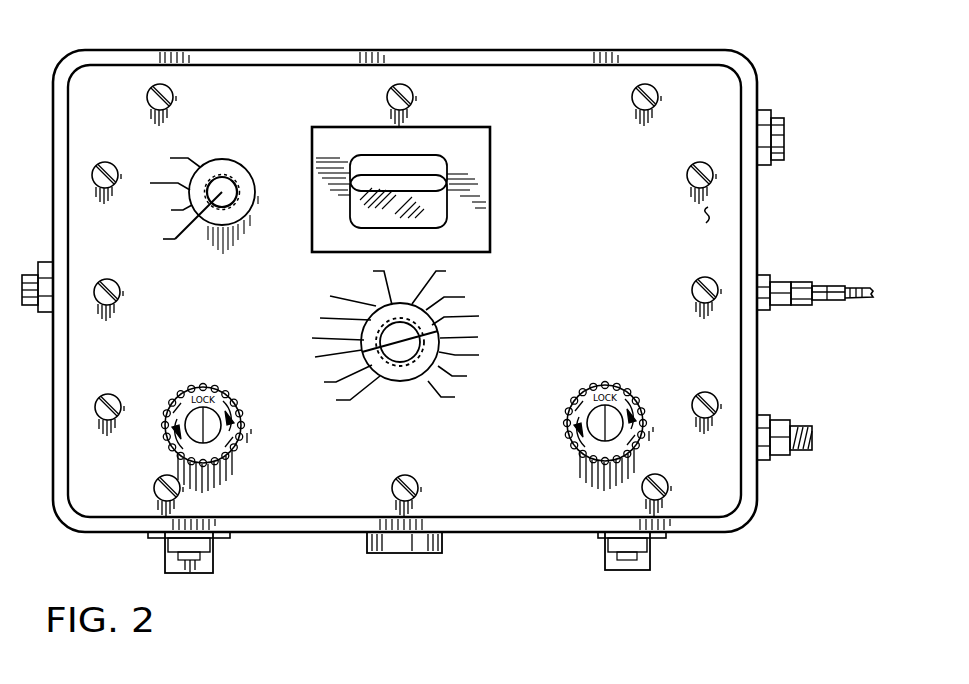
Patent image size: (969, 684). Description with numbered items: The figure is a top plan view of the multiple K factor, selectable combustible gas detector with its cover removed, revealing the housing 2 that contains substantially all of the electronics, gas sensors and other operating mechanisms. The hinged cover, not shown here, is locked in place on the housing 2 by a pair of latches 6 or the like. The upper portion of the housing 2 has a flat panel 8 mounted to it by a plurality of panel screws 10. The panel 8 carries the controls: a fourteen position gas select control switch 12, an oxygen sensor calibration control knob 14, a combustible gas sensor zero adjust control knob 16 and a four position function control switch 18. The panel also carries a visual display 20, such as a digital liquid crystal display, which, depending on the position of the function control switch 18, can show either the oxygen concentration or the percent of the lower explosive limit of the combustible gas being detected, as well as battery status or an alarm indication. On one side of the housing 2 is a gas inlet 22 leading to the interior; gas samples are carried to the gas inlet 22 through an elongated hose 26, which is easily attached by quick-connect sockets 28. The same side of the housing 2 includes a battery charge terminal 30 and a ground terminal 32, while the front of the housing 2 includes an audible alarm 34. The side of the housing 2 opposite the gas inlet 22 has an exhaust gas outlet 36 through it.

The housing 2 is at (520, 50).
The latches 6 is at (213, 550).
The flat panel 8 is at (712, 214).
The panel screws 10 is at (635, 108).
The gas select control switch 12 is at (417, 364).
The oxygen sensor calibration control knob 14 is at (632, 398).
The combustible gas sensor zero adjust control knob 16 is at (233, 452).
The function control switch 18 is at (222, 192).
The visual display 20 is at (447, 200).
The gas inlet 22 is at (775, 278).
The hose 26 is at (864, 299).
The quick-connect sockets 28 is at (826, 285).
The battery charge terminal 30 is at (779, 118).
The ground terminal 32 is at (805, 425).
The audible alarm 34 is at (403, 553).
The exhaust gas outlet 36 is at (50, 312).